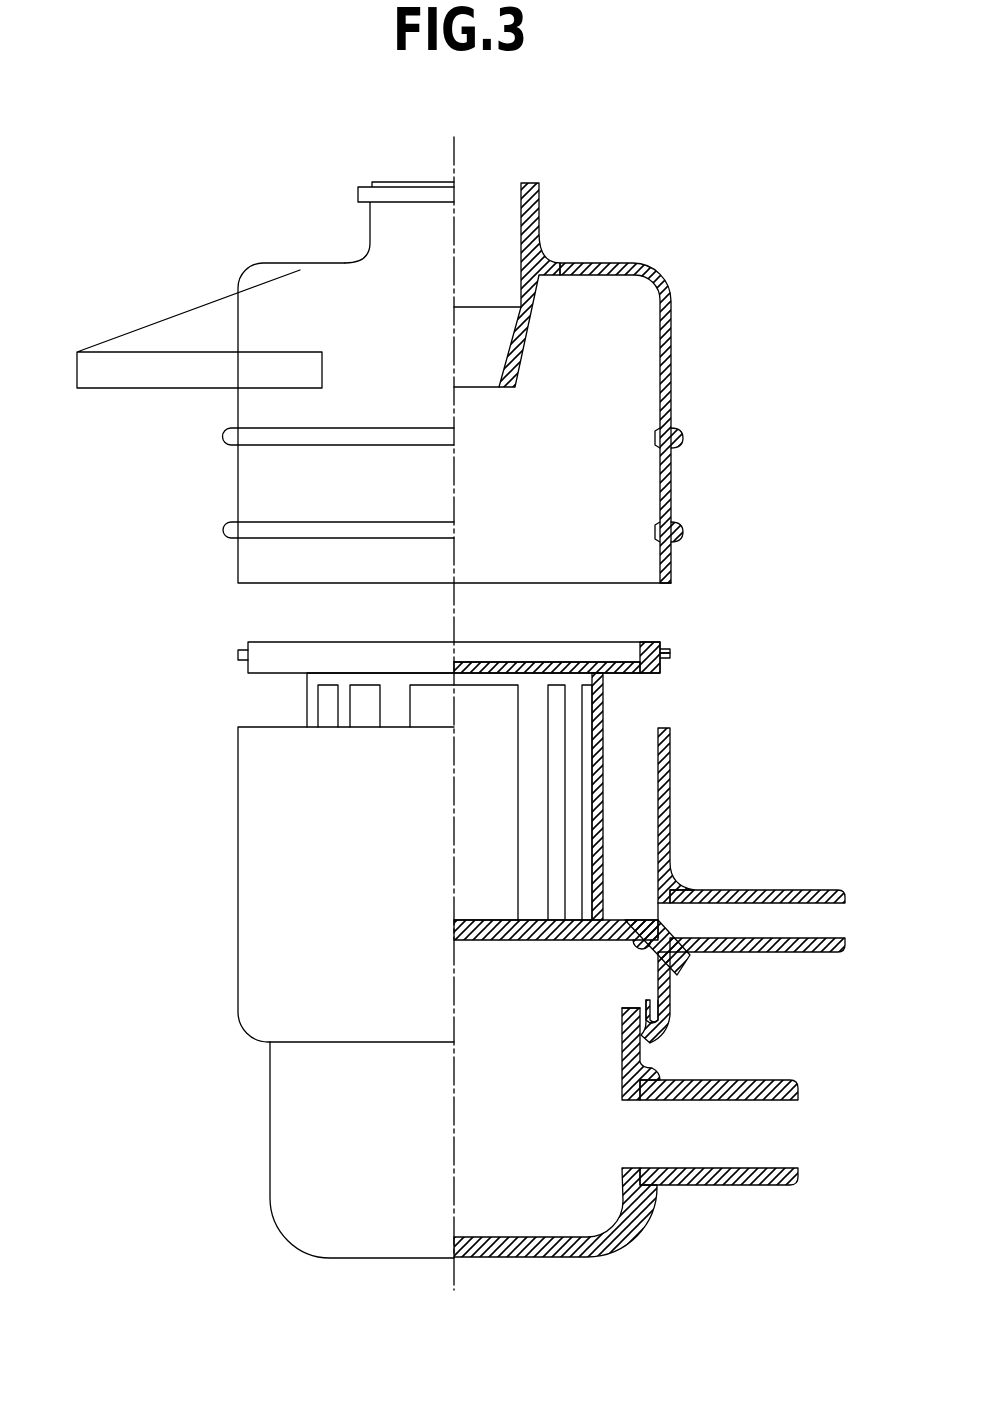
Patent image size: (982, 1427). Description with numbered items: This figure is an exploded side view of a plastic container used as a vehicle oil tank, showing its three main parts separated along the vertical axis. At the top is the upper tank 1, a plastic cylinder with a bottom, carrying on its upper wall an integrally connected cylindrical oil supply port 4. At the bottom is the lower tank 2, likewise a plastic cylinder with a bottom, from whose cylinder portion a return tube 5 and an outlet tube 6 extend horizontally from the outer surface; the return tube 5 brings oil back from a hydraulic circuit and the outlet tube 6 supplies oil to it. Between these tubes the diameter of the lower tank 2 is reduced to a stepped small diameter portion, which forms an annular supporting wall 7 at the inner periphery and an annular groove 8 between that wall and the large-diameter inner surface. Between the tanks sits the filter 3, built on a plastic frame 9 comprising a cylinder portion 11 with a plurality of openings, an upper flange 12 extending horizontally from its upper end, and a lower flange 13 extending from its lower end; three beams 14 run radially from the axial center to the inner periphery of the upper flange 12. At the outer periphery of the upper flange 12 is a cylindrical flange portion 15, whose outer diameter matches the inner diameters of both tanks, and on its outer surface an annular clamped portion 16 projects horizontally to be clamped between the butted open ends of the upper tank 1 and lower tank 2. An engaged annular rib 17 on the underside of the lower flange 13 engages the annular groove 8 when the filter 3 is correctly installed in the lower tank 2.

The upper tank 1 is at (296, 271).
The lower tank 2 is at (290, 1163).
The filter 3 is at (612, 793).
The oil supply port 4 is at (522, 203).
The return tube 5 is at (820, 952).
The outlet tube 6 is at (738, 1187).
The annular supporting wall 7 is at (620, 1017).
The annular groove 8 is at (652, 1012).
The frame 9 is at (498, 818).
The cylinder portion 11 is at (597, 821).
The upper flange 12 is at (625, 673).
The lower flange 13 is at (620, 932).
The beams 14 is at (495, 660).
The cylindrical flange portion 15 is at (665, 645).
The annular clamped portion 16 is at (672, 656).
The engaged annular rib 17 is at (675, 973).